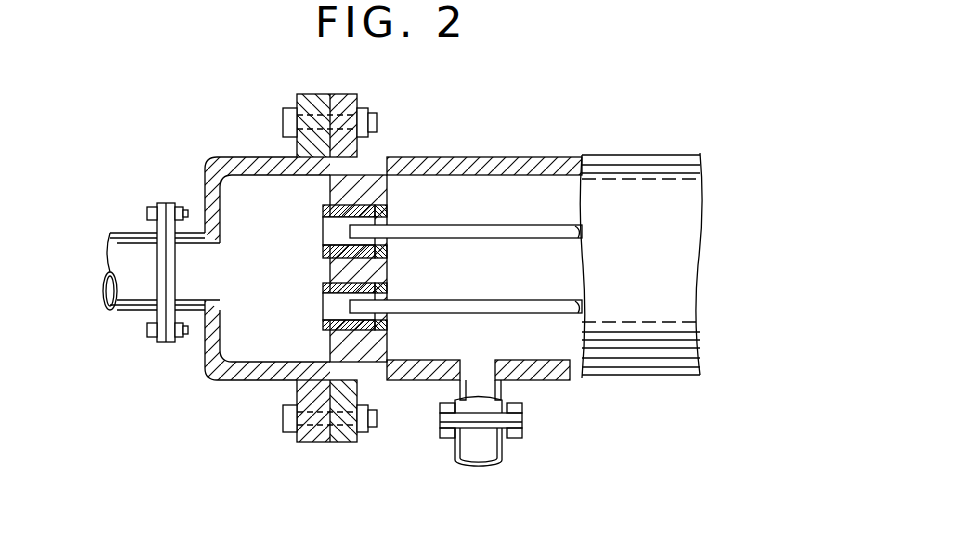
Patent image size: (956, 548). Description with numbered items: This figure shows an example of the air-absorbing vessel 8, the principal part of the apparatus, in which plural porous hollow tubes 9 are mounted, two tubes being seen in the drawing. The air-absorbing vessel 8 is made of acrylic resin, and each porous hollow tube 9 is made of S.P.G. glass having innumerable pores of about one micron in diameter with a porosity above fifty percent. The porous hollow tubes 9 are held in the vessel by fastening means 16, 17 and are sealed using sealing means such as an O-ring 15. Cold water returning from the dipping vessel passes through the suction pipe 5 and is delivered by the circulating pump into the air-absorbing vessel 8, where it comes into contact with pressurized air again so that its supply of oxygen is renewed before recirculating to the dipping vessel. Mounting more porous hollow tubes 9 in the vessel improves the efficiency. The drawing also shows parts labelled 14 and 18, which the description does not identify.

The suction pipe 5 is at (125, 312).
The air-absorbing vessel 8 is at (512, 126).
The porous hollow tube 9 is at (565, 230).
The drain pipe 14 is at (503, 442).
The O-ring 15 is at (388, 224).
The fastening means 16 is at (388, 180).
The fastening means 17 is at (350, 207).
The flange 18 is at (157, 205).